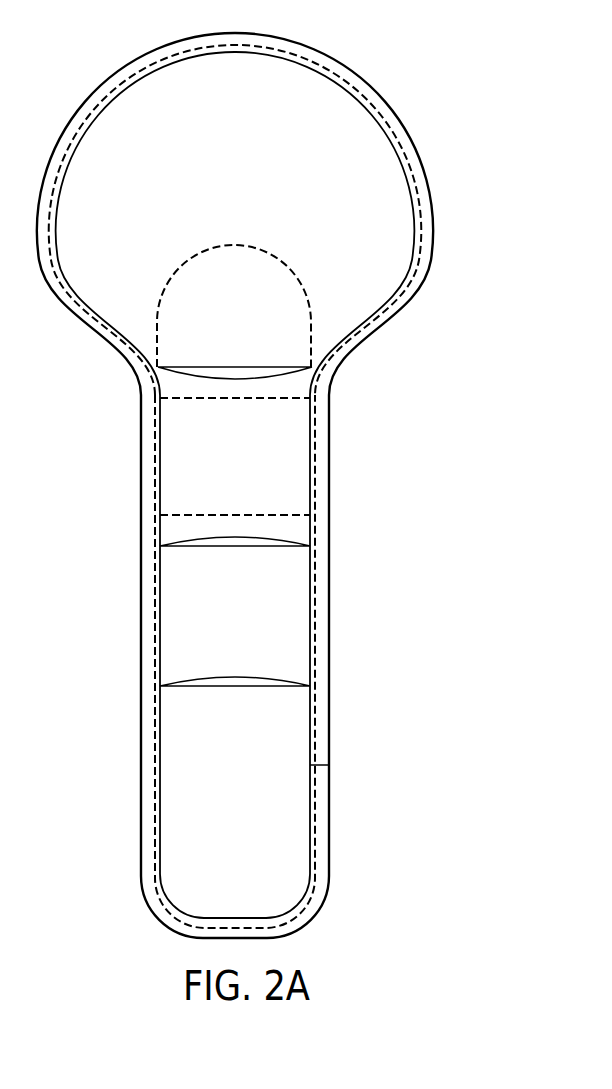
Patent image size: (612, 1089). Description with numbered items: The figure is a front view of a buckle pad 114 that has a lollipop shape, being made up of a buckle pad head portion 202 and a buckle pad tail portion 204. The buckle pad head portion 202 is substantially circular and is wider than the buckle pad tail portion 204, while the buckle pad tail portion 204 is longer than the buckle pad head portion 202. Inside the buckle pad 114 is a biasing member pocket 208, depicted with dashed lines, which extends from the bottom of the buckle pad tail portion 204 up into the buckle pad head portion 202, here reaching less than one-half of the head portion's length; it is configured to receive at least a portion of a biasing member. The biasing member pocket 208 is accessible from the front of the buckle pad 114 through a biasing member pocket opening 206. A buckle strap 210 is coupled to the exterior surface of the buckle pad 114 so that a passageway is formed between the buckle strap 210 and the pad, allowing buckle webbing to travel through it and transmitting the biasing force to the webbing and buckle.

The buckle pad 114 is at (246, 474).
The buckle pad head portion 202 is at (137, 125).
The buckle pad tail portion 204 is at (342, 397).
The biasing member pocket opening 206 is at (208, 683).
The biasing member pocket 208 is at (183, 298).
The buckle strap 210 is at (179, 463).